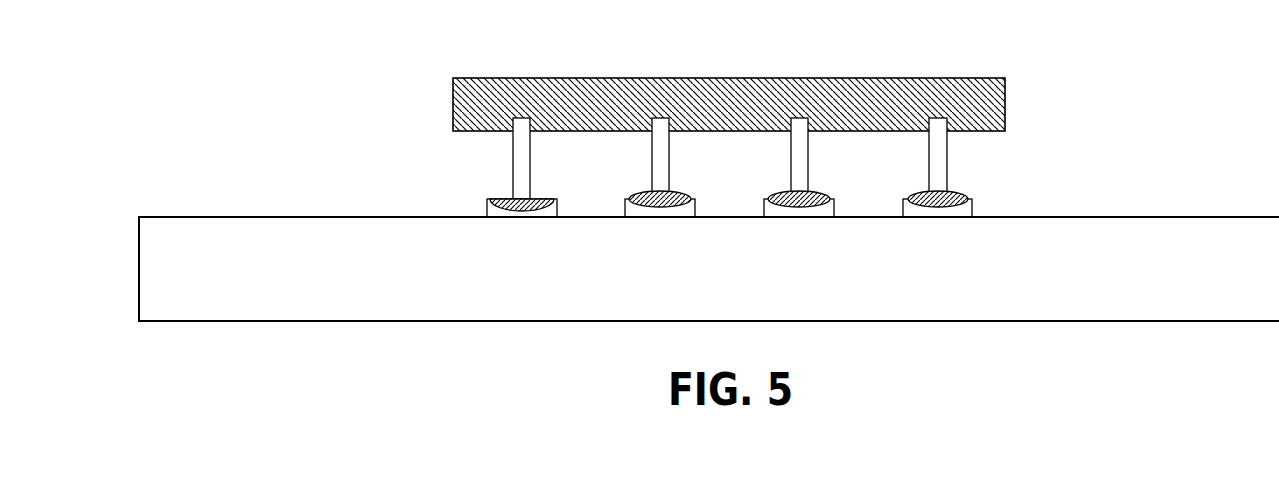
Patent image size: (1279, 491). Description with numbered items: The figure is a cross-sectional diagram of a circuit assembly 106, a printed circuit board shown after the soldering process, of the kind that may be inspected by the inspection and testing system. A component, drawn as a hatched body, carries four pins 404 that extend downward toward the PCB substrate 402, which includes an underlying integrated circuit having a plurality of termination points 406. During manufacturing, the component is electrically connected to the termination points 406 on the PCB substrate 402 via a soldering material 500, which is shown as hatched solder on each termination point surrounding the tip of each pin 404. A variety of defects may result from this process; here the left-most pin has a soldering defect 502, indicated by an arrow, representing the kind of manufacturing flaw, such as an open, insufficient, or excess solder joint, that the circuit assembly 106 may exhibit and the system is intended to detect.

The circuit assembly 106 is at (1135, 78).
The PCB substrate 402 is at (1075, 215).
The pins 404 is at (790, 165).
The termination points 406 is at (973, 208).
The soldering material 500 is at (919, 192).
The soldering defect 502 is at (481, 183).